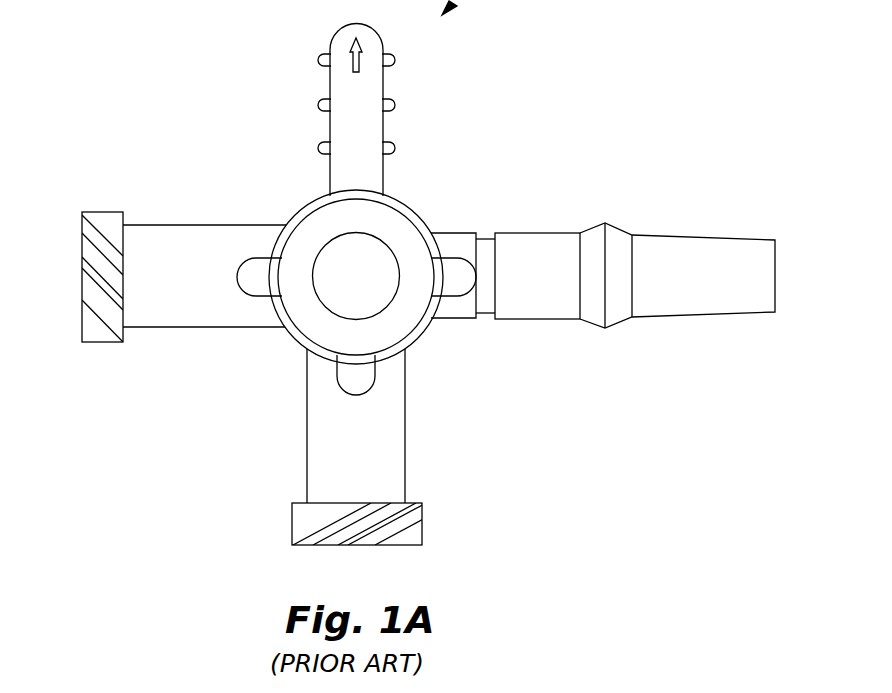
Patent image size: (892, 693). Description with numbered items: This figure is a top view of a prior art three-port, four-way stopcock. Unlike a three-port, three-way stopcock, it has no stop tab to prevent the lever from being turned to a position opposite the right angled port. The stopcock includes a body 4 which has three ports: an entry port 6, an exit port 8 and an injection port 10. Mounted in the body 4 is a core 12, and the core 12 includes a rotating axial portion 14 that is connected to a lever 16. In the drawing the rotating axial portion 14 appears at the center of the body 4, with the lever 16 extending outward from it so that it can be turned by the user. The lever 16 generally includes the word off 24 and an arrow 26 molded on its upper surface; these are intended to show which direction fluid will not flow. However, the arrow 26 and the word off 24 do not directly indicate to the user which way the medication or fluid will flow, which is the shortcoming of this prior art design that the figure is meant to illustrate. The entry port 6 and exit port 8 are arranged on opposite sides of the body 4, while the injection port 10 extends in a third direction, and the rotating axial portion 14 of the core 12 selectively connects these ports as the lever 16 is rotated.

The body 4 is at (307, 370).
The entry port 6 is at (82, 285).
The exit port 8 is at (777, 280).
The injection port 10 is at (383, 545).
The core 12 is at (413, 205).
The rotating axial portion 14 is at (333, 253).
The lever 16 is at (353, 110).
The word "off" 24 is at (373, 158).
The arrow 26 is at (360, 46).